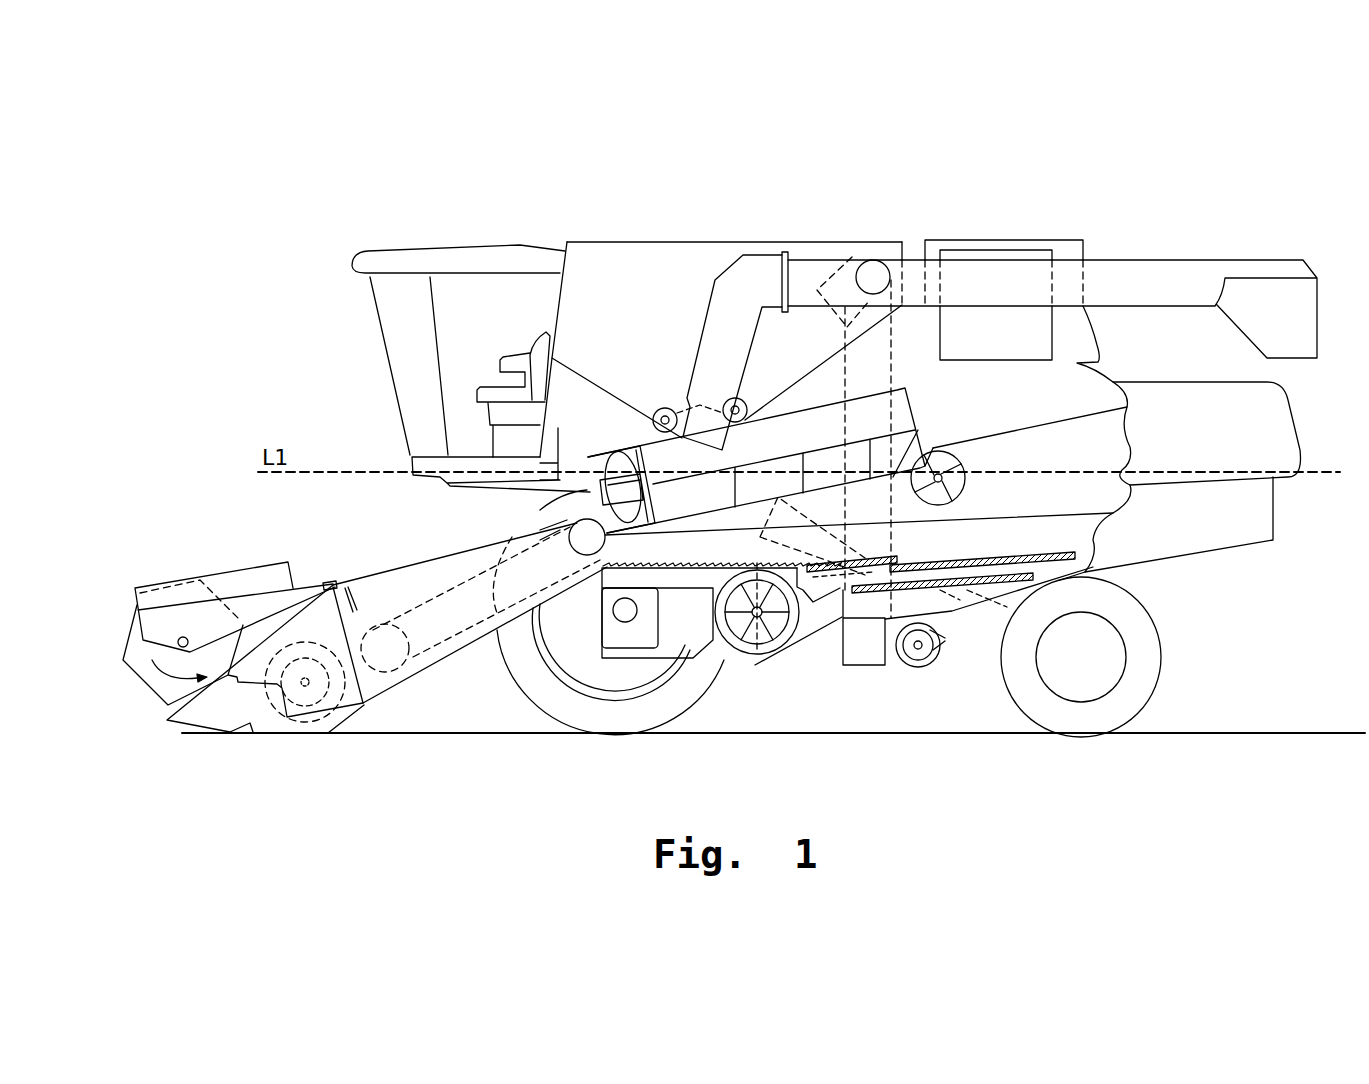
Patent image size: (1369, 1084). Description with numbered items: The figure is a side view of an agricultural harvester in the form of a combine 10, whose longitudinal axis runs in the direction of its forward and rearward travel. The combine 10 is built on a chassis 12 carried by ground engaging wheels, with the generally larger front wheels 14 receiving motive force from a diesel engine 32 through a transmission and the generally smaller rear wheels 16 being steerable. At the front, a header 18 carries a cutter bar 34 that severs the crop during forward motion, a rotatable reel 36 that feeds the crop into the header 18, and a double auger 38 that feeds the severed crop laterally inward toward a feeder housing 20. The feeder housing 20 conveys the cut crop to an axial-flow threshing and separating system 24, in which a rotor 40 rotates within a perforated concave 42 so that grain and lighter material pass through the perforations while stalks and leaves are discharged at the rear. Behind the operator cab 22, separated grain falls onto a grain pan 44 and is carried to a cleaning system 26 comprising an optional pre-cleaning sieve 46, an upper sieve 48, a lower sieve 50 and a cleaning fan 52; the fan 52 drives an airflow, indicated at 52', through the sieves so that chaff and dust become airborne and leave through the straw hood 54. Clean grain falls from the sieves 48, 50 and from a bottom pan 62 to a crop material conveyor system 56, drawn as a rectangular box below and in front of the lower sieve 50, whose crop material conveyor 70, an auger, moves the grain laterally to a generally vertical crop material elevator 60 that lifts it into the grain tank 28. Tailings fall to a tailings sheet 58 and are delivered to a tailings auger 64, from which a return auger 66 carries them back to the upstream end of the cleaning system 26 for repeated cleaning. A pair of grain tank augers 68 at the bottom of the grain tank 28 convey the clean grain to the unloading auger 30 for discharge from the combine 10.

The combine 10 is at (446, 220).
The chassis 12 is at (1095, 574).
The front wheels 14 is at (533, 692).
The rear wheels 16 is at (1155, 673).
The header 18 is at (218, 551).
The feeder housing 20 is at (427, 573).
The operator cab 22 is at (387, 343).
The threshing and separating system 24 is at (522, 506).
The cleaning system 26 is at (820, 669).
The grain tank 28 is at (618, 247).
The unloading auger 30 is at (1173, 268).
The diesel engine 32 is at (983, 253).
The cutter bar 34 is at (230, 735).
The reel 36 is at (128, 632).
The double auger 38 is at (309, 703).
The rotor 40 is at (615, 462).
The concave 42 is at (795, 438).
The grain pan 44 is at (598, 590).
The pre-cleaning sieve 46 is at (898, 557).
The upper sieve 48 is at (1000, 557).
The lower sieve 50 is at (967, 588).
The cleaning fan 52 is at (778, 645).
The air flow 52' is at (746, 716).
The straw hood 54 is at (1283, 423).
The crop material conveyor system 56 is at (855, 678).
The tailings sheet 58 is at (1017, 595).
The crop material elevator 60 is at (902, 368).
The bottom pan 62 is at (993, 592).
The tailings auger 64 is at (918, 660).
The return auger 66 is at (833, 536).
The grain tank augers 68 is at (665, 408).
The crop material conveyor 70 is at (1240, 559).